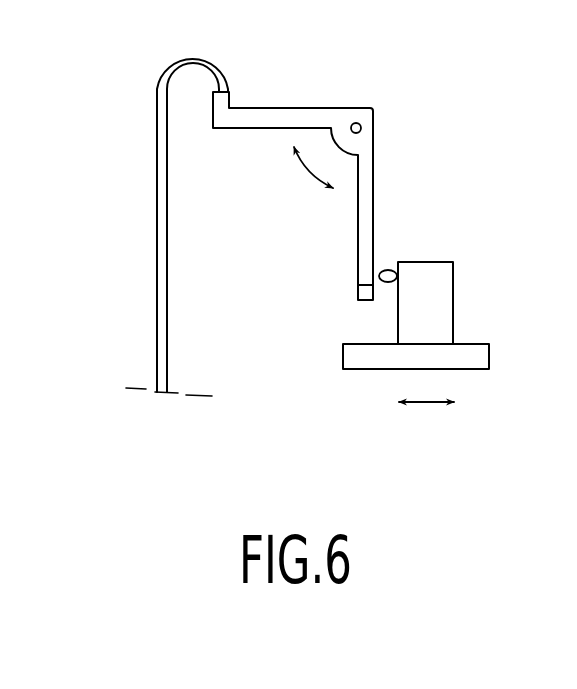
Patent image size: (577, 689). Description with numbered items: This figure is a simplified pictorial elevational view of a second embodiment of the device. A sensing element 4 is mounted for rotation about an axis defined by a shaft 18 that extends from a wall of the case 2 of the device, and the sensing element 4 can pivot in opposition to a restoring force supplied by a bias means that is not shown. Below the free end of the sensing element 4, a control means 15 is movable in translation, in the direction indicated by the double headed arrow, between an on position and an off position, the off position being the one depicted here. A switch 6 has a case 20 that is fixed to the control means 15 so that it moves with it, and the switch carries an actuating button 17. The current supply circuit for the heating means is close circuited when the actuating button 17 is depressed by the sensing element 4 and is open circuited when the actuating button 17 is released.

The support pole 2 is at (158, 256).
The sensing element 4 is at (362, 180).
The switch 6 is at (466, 268).
The control means 15 is at (470, 359).
The actuating button 17 is at (387, 270).
The shaft 18 is at (361, 127).
The case 20 is at (438, 310).